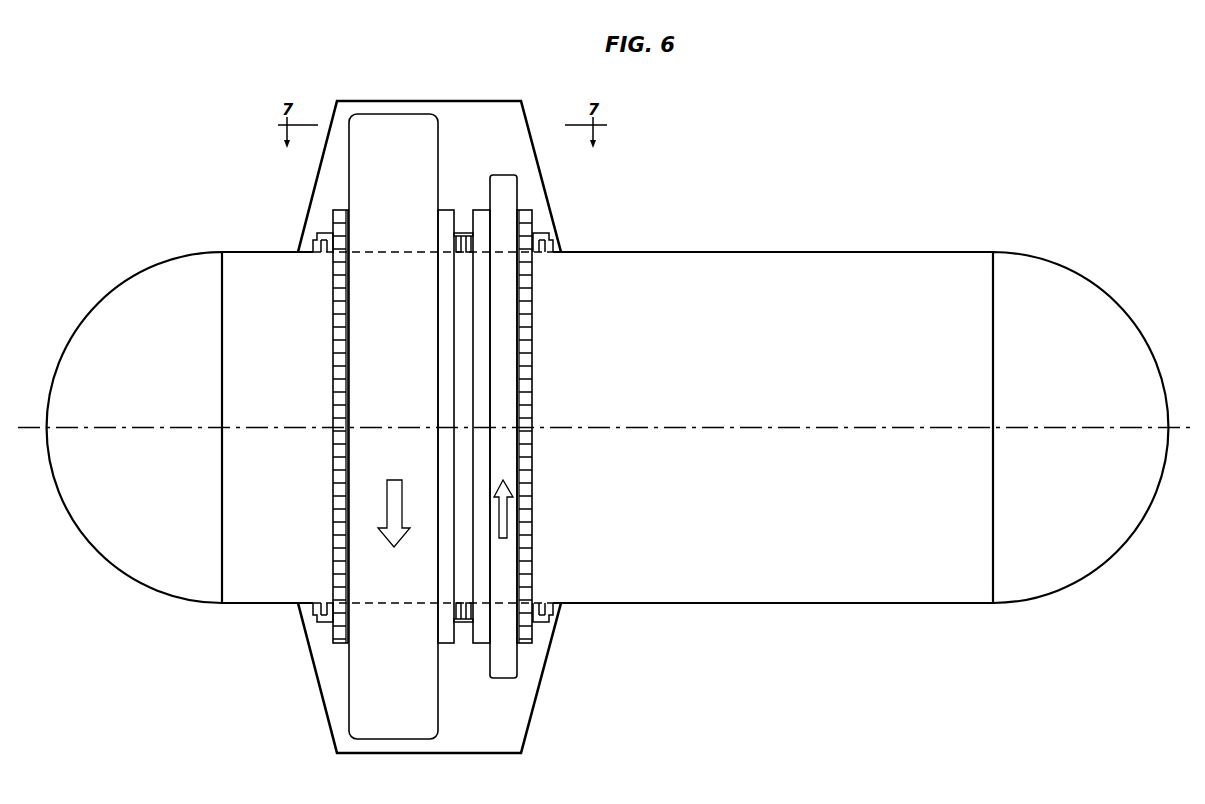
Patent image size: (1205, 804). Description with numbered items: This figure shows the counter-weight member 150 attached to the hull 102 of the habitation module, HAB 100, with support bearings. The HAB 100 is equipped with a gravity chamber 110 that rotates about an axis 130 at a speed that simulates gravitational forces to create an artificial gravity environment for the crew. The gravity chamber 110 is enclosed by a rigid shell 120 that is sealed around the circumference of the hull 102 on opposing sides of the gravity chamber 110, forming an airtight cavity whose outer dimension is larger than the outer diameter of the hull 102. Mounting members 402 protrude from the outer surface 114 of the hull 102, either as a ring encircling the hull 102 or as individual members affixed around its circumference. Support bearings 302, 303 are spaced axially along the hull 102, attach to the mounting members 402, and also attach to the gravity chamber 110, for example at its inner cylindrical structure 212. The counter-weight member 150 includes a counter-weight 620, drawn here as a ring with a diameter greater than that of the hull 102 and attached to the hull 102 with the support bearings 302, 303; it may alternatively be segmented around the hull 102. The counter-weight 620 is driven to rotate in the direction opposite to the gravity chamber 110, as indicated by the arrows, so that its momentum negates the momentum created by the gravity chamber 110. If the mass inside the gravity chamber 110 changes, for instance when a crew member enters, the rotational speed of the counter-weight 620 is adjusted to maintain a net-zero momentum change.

The HAB 100 is at (608, 385).
The hull 102 is at (836, 252).
The gravity chamber 110 is at (374, 695).
The outer surface 114 is at (684, 241).
The shell 120 is at (460, 101).
The axis 130 is at (1072, 430).
The counter-weight member 150 is at (503, 706).
The inner cylindrical structure 212 is at (377, 266).
The support bearing 302 is at (333, 296).
The support bearing 303 is at (483, 665).
The mounting member 402 is at (322, 238).
The counter-weight 620 is at (505, 183).